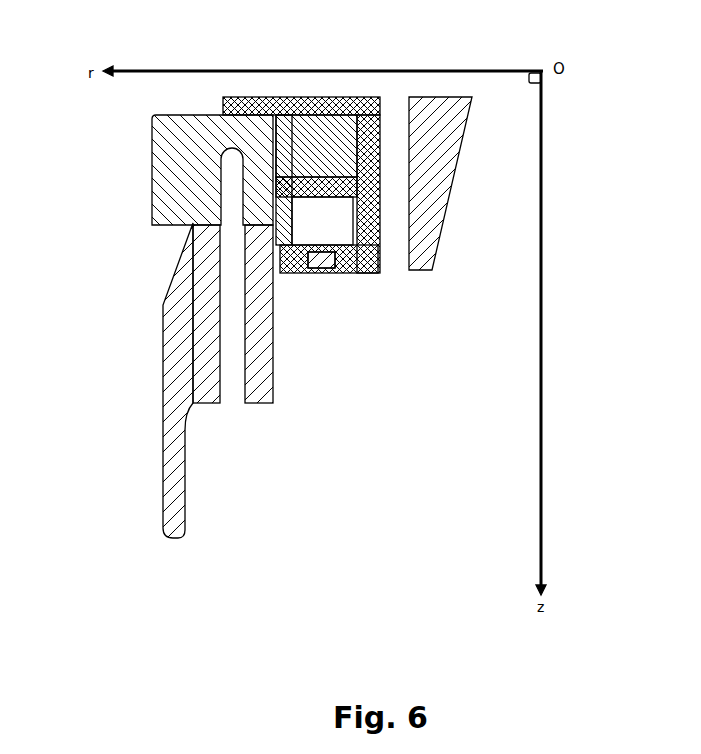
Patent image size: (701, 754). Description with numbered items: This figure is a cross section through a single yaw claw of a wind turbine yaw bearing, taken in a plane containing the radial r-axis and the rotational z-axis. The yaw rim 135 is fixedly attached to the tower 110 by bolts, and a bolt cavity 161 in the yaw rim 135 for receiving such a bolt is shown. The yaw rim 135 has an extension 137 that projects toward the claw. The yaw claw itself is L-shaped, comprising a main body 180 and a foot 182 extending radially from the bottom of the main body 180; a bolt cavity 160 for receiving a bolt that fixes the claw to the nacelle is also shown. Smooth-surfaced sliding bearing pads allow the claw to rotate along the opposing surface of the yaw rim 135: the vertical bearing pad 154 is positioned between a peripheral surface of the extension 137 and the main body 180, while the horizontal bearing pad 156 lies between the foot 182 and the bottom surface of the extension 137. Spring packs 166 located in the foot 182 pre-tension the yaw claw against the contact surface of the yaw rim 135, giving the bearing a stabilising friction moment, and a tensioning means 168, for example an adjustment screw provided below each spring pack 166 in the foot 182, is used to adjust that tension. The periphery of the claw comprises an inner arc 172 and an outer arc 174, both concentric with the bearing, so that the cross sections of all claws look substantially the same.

The tower 110 is at (177, 389).
The yaw rim 135 is at (190, 175).
The extension 137 is at (323, 127).
The vertical bearing pad 154 is at (360, 133).
The horizontal bearing pad 156 is at (325, 188).
The bolt cavity 160 is at (395, 217).
The bolt cavity 161 is at (225, 357).
The spring pack 166 is at (315, 227).
The tensioning means 168 is at (322, 260).
The inner arc 172 is at (461, 150).
The outer arc 174 is at (280, 252).
The main body 180 is at (418, 243).
The foot 182 is at (292, 263).